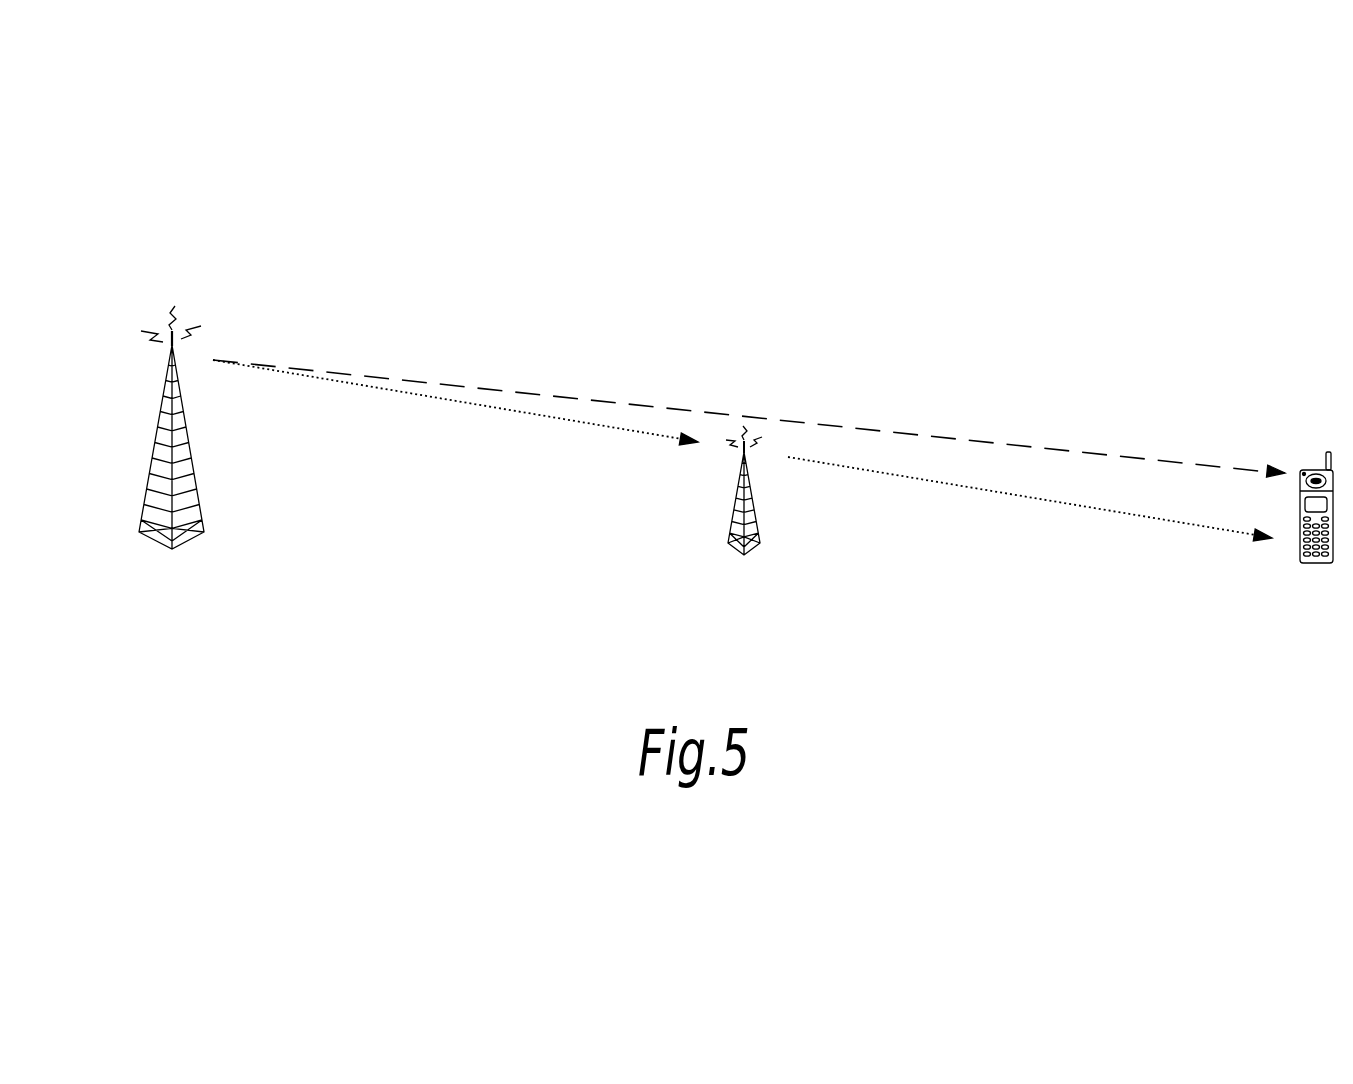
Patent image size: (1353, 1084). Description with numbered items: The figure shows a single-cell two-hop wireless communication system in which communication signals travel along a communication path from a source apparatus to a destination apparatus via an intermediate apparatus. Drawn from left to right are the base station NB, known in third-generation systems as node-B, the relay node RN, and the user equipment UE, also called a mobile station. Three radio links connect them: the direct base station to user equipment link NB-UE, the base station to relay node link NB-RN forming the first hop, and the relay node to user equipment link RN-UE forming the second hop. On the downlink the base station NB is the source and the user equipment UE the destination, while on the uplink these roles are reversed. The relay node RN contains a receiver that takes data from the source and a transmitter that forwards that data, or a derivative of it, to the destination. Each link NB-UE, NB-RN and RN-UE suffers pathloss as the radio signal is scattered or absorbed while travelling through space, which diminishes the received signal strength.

The base station (node-B) NB is at (151, 470).
The relay node RN is at (761, 530).
The user equipment UE is at (1316, 528).
The base station to user equipment link NB-UE is at (749, 418).
The base station to relay node link NB-RN is at (455, 419).
The relay node to user equipment link RN-UE is at (1030, 514).